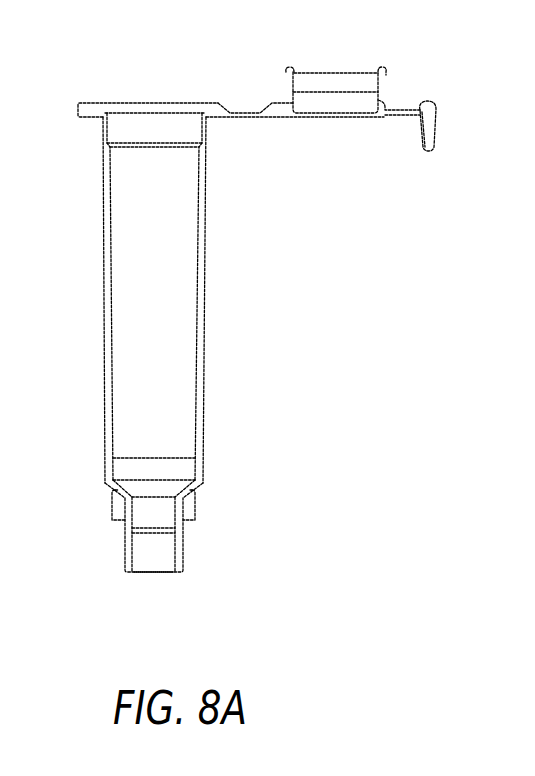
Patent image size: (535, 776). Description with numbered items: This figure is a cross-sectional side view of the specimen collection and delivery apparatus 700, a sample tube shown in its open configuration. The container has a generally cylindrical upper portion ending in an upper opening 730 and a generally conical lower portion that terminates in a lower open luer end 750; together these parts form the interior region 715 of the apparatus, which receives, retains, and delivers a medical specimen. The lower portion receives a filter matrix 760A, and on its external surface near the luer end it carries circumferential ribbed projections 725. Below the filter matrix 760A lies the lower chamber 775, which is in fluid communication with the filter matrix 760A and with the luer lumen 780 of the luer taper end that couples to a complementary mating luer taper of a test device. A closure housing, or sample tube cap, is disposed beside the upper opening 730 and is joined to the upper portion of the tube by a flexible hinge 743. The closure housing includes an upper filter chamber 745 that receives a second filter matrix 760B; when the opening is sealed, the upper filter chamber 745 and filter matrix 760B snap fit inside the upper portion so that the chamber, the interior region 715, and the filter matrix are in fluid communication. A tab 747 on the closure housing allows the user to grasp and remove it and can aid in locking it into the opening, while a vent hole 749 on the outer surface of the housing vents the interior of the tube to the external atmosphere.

The specimen collection and delivery apparatus 700 is at (244, 351).
The upper opening 730 is at (160, 120).
The upper filter chamber 745 is at (307, 88).
The flexible hinge 743 is at (245, 118).
The vent hole 749 is at (333, 118).
The filter matrix 760B is at (365, 109).
The tab 747 is at (429, 135).
The interior region 715 is at (173, 255).
The filter matrix 760A is at (180, 469).
The circumferential ribbed projections 725 is at (189, 508).
The lower chamber 775 is at (144, 518).
The lower open luer end 750 is at (128, 562).
The luer lumen 780 is at (157, 561).